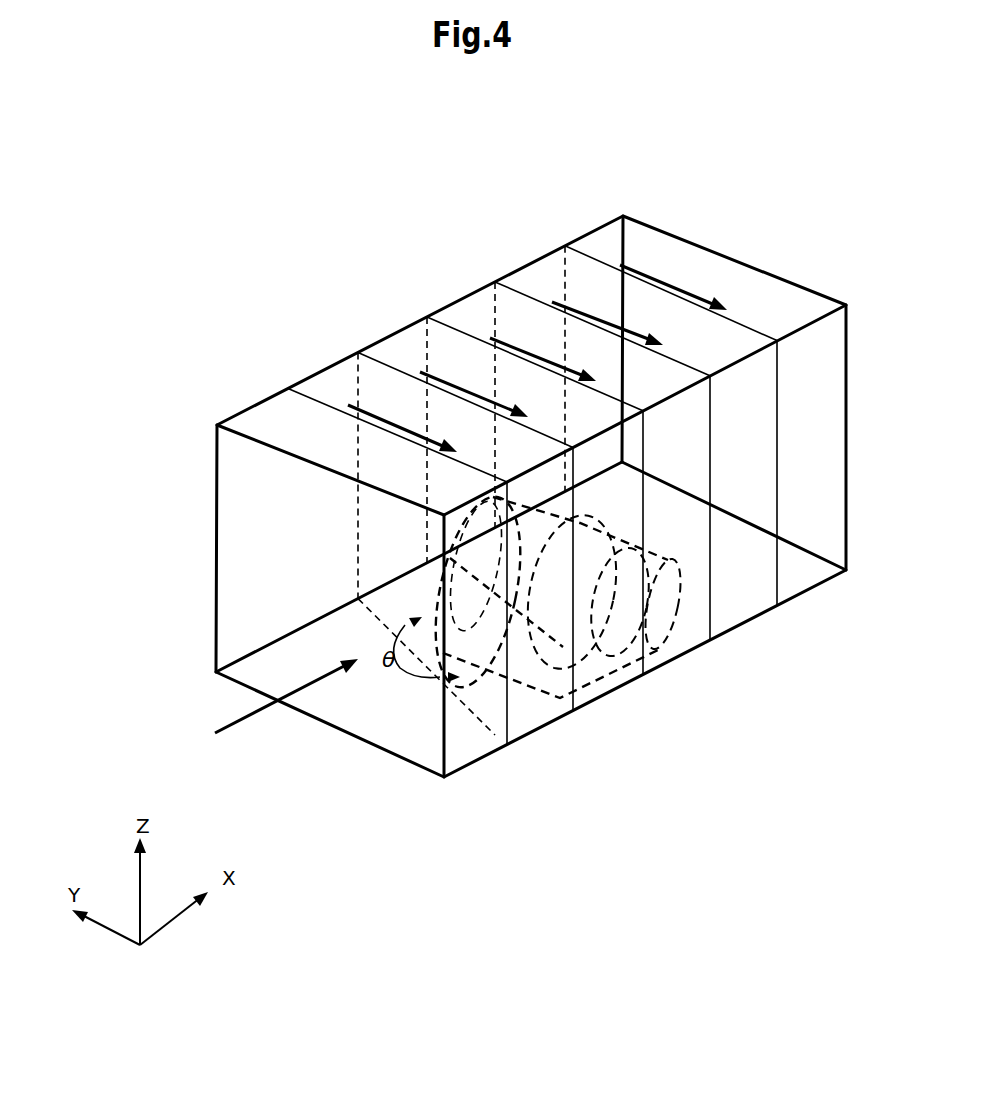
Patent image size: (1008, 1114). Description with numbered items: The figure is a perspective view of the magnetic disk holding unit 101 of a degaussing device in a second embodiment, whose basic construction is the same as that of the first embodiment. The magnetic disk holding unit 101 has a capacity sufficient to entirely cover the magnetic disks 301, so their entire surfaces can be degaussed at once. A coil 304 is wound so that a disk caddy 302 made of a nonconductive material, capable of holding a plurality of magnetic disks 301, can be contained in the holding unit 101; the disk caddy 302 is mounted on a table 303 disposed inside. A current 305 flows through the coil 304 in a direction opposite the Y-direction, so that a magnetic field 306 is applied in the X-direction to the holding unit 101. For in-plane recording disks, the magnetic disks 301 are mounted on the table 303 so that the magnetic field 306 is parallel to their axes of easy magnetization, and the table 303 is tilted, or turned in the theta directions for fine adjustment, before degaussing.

The magnetic disk holding unit 101 is at (668, 213).
The magnetic disks 301 is at (647, 660).
The disk caddy 302 is at (666, 556).
The table 303 is at (558, 672).
The coil 304 is at (778, 432).
The current 305 is at (667, 285).
The magnetic field 306 is at (242, 717).